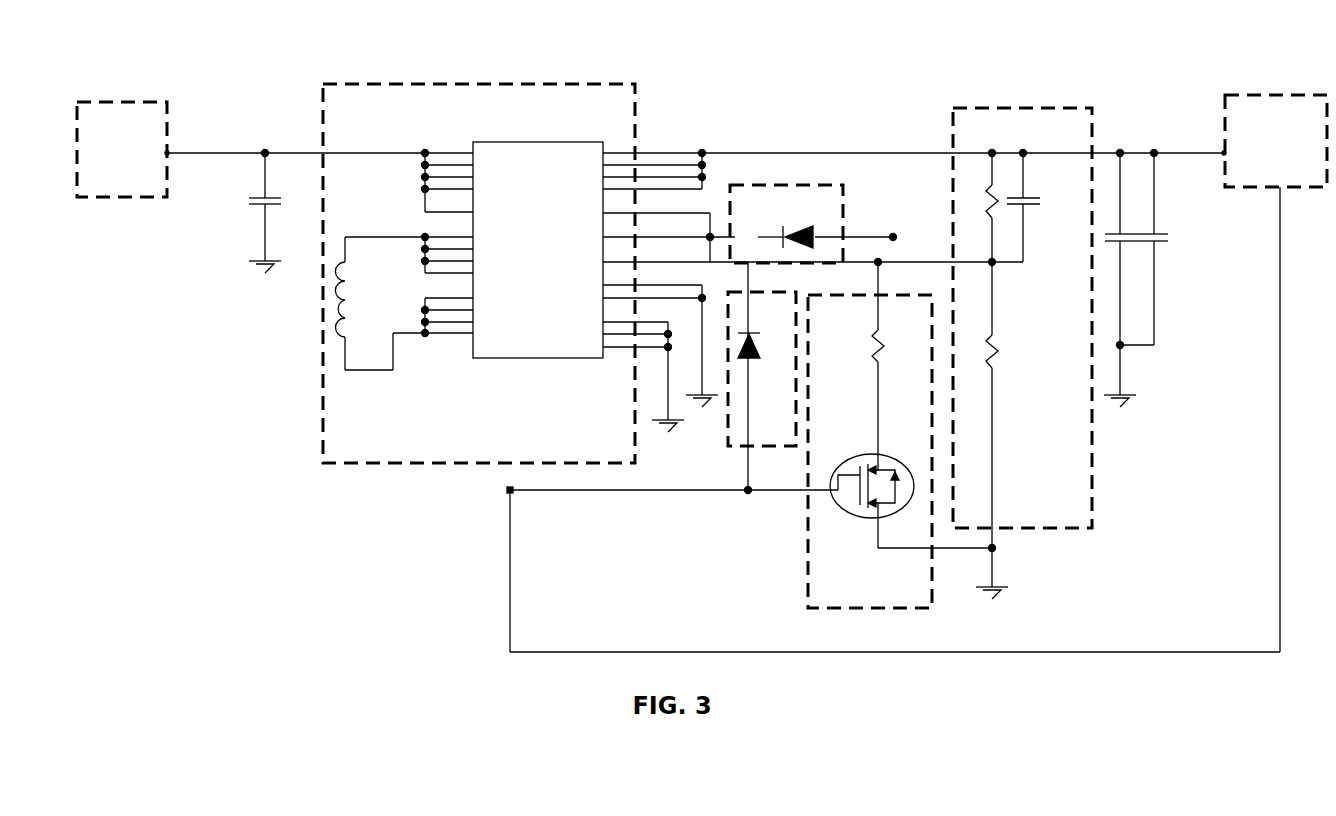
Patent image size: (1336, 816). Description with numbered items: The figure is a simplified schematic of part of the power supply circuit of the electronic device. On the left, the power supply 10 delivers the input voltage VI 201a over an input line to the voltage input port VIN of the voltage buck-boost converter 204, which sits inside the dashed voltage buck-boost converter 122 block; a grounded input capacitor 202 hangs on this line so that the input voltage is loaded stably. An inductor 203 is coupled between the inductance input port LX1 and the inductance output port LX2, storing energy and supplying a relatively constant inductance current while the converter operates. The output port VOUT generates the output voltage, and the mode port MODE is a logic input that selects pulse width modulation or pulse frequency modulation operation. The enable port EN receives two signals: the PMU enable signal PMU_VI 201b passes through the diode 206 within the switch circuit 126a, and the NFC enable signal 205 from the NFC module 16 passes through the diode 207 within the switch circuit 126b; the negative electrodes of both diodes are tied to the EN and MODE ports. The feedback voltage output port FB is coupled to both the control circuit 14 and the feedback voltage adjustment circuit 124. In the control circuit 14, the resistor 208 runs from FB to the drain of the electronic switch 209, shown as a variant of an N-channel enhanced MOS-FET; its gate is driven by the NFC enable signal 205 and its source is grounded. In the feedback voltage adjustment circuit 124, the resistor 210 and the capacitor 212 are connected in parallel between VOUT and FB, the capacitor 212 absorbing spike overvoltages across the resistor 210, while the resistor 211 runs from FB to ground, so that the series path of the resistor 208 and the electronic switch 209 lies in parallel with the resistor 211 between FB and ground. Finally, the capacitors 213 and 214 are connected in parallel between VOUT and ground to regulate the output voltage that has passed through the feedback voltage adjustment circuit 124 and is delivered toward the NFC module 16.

The power supply 10 is at (122, 149).
The input voltage VI 201a is at (319, 140).
The input capacitor 202 is at (243, 213).
The voltage buck-boost converter 122 is at (479, 273).
The voltage buck-boost converter 204 is at (515, 380).
The inductor 203 is at (330, 332).
The switch circuit 126a is at (786, 224).
The diode 206 is at (786, 230).
The PMU enable signal PMU_VI 201b is at (895, 213).
The switch circuit 126b is at (762, 369).
The diode 207 is at (763, 352).
The NFC enable signal 205 is at (792, 419).
The control circuit 14 is at (870, 463).
The resistor 208 is at (868, 375).
The electronic switch 209 is at (848, 473).
The feedback voltage adjustment circuit 124 is at (1022, 318).
The resistor 210 is at (970, 208).
The resistor 211 is at (1000, 345).
The capacitor 212 is at (1040, 198).
The capacitor 213 is at (1100, 262).
The capacitor 214 is at (1168, 240).
The NFC module 16 is at (1276, 141).